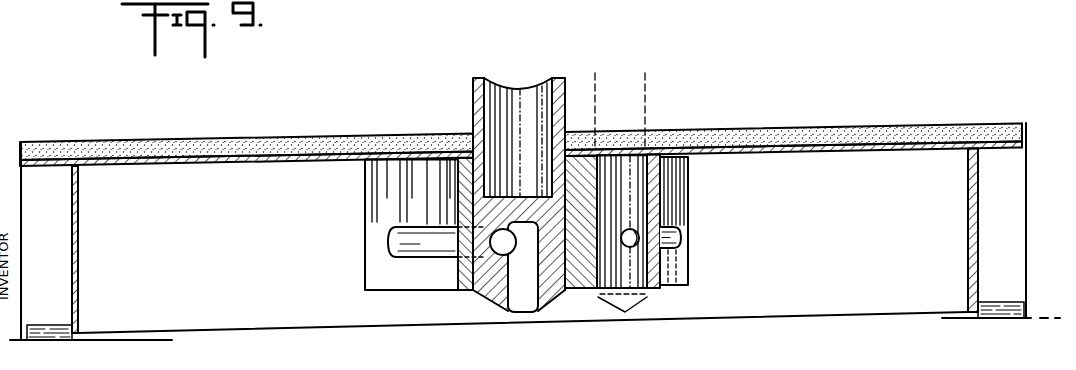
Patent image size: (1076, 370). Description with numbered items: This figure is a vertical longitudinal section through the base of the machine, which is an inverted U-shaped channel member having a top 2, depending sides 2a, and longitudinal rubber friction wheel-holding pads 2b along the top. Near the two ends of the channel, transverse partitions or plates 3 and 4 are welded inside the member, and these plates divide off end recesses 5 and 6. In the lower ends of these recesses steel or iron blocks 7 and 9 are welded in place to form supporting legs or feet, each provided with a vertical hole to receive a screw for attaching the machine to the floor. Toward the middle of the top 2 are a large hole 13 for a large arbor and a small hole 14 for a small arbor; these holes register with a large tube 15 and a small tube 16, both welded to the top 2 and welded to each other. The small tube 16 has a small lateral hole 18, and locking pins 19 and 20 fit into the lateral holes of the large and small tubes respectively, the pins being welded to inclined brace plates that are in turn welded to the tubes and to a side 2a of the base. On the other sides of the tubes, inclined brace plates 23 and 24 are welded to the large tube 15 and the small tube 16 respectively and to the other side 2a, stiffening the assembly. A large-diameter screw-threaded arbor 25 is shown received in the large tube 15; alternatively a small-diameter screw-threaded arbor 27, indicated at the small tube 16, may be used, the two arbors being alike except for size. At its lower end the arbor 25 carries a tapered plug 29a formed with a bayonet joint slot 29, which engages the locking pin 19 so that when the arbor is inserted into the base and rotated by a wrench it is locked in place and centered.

The top 2 is at (188, 166).
The sides 2a is at (268, 305).
The longitudinal rubber friction wheel-holding pads 2b is at (186, 142).
The transverse partition or plate 3 is at (80, 235).
The transverse partition or plate 4 is at (966, 201).
The end recess 5 is at (54, 218).
The end recess 6 is at (1010, 194).
The block 7 is at (41, 325).
The block 9 is at (1000, 306).
The large hole 13 is at (478, 272).
The small hole 14 is at (643, 272).
The large tube 15 is at (460, 182).
The small tube 16 is at (655, 203).
The small lateral hole 18 is at (639, 238).
The locking pin 19 is at (425, 240).
The locking pin 20 is at (677, 231).
The inclined brace plate 23 is at (380, 172).
The inclined brace plate 24 is at (677, 168).
The large diameter screw-threaded arbor 25 is at (478, 100).
The small-diameter screw-threaded arbor 27 is at (645, 108).
The bayonet joint slot 29 is at (522, 292).
The tapered plug 29a is at (497, 295).